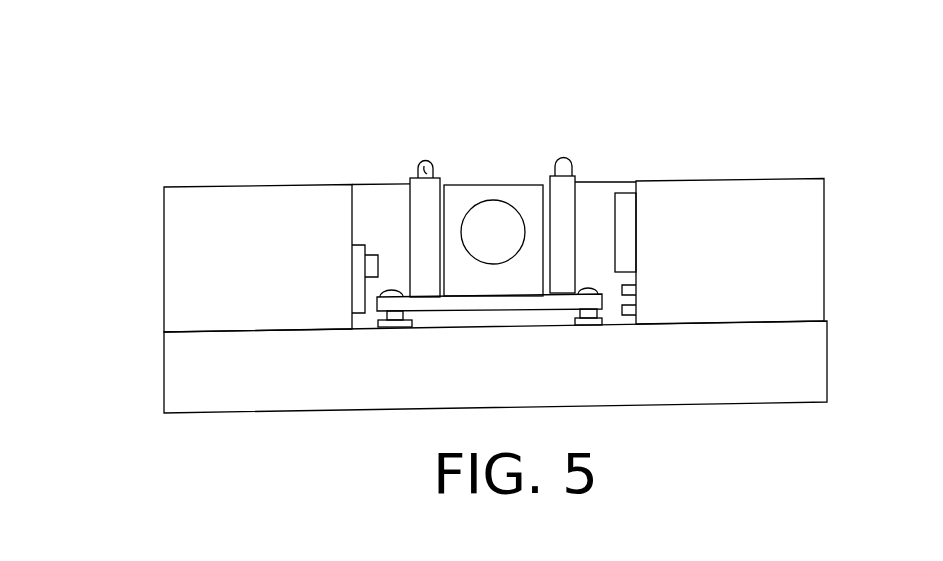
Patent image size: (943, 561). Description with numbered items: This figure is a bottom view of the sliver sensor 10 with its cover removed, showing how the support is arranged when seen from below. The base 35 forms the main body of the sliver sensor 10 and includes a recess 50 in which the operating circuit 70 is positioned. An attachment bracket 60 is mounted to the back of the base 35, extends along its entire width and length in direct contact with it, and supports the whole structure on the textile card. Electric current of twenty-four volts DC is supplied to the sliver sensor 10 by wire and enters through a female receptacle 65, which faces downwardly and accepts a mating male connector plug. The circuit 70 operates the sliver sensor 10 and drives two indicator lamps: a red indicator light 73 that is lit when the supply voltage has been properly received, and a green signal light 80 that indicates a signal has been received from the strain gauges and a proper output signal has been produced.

The sliver sensor 10 is at (118, 111).
The base 35 is at (193, 277).
The recess 50 is at (353, 220).
The attachment bracket 60 is at (278, 389).
The female receptacle 65 is at (494, 215).
The circuit 70 is at (457, 170).
The red indicator light 73 is at (565, 173).
The green signal light 80 is at (425, 163).